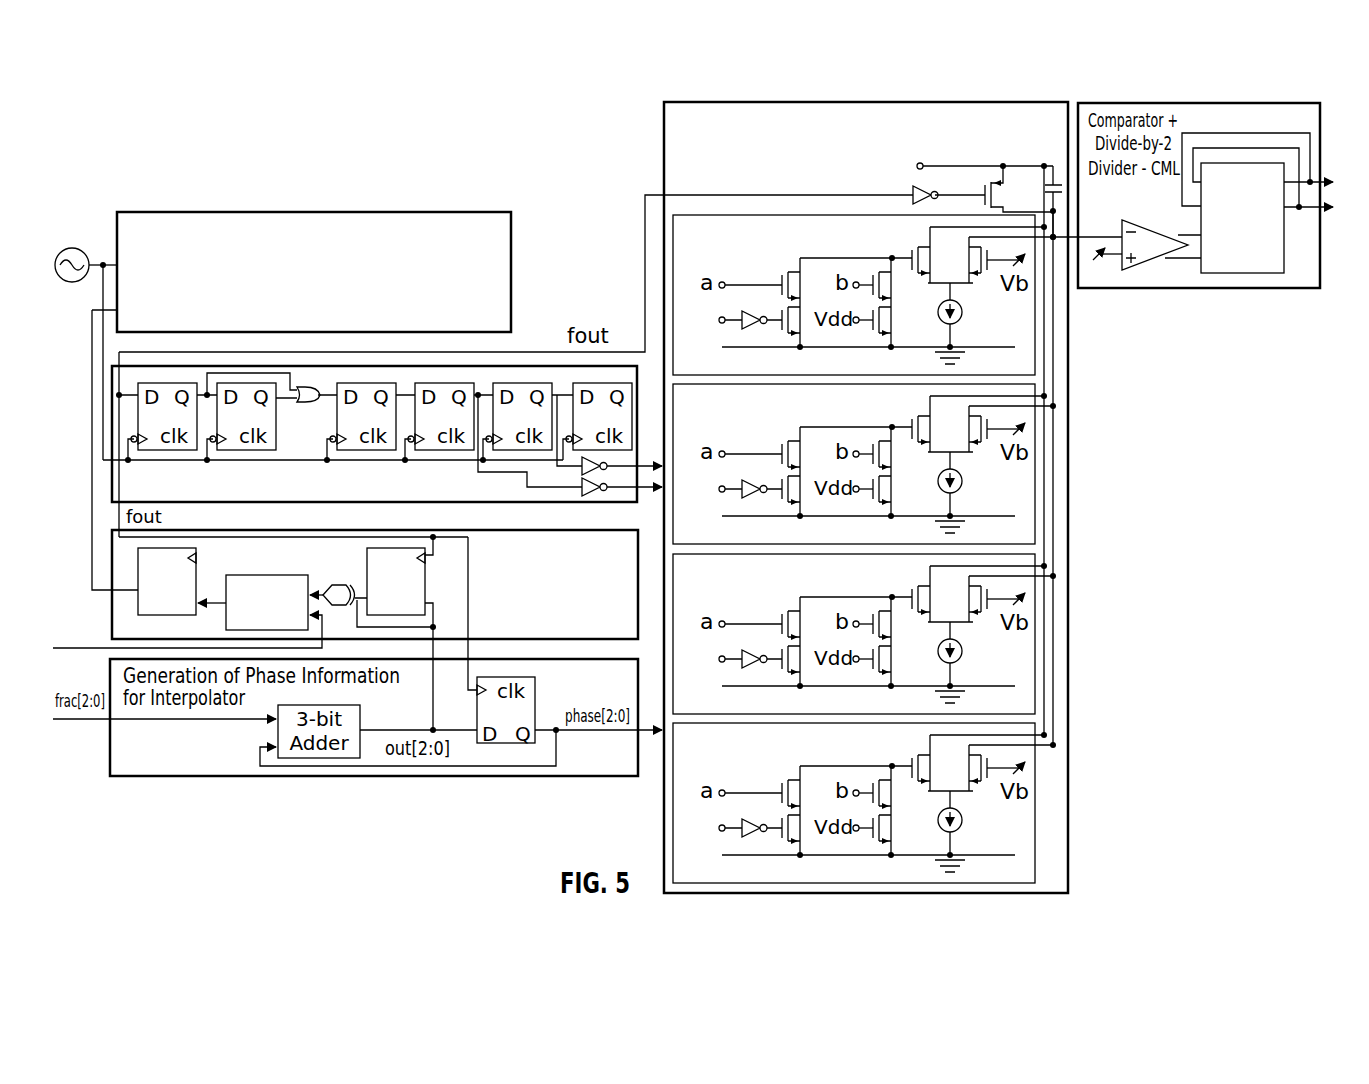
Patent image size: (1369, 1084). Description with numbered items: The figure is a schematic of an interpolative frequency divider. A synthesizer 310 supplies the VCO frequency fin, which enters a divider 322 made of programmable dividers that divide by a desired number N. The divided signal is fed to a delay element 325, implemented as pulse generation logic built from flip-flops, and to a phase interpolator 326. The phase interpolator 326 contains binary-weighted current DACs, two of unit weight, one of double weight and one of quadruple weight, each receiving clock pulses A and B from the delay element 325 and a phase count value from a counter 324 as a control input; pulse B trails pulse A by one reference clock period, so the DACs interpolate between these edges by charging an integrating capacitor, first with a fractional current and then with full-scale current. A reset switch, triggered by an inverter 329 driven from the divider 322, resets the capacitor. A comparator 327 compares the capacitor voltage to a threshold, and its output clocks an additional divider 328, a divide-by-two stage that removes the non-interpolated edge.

The synthesizer 310 is at (70, 247).
The divider 322 is at (455, 212).
The counter 324 is at (110, 590).
The delay element 325 is at (110, 427).
The phase interpolator 326 is at (878, 166).
The comparator 327 is at (1145, 262).
The additional divider 328 is at (1300, 268).
The inverter 329 is at (905, 200).